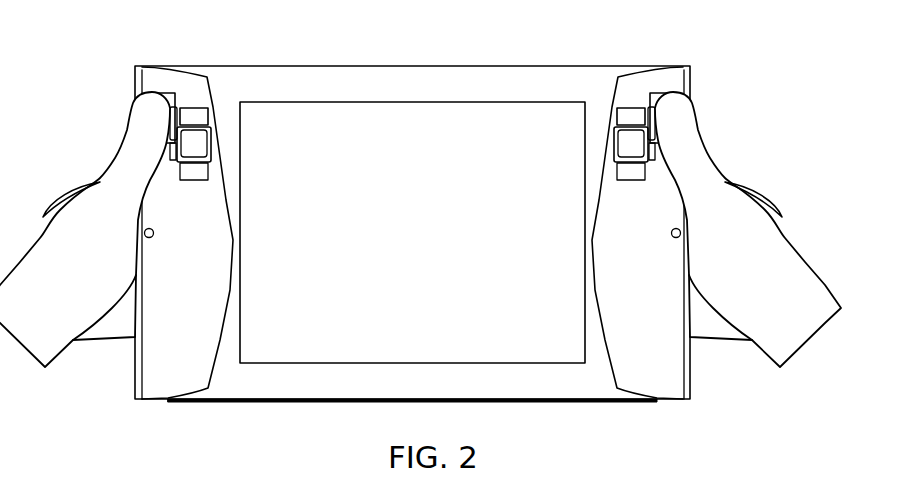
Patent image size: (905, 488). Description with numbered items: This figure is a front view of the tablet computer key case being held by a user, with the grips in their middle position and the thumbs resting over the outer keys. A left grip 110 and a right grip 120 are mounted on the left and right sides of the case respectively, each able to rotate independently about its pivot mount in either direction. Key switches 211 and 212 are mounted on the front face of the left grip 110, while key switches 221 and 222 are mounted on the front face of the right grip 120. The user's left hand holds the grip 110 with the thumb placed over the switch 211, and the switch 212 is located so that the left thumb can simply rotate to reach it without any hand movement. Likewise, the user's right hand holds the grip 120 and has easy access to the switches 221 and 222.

The grip 110 is at (136, 399).
The grip 120 is at (690, 401).
The key switch 211 is at (178, 106).
The key switch 212 is at (210, 126).
The key switch 221 is at (647, 107).
The key switch 222 is at (615, 126).